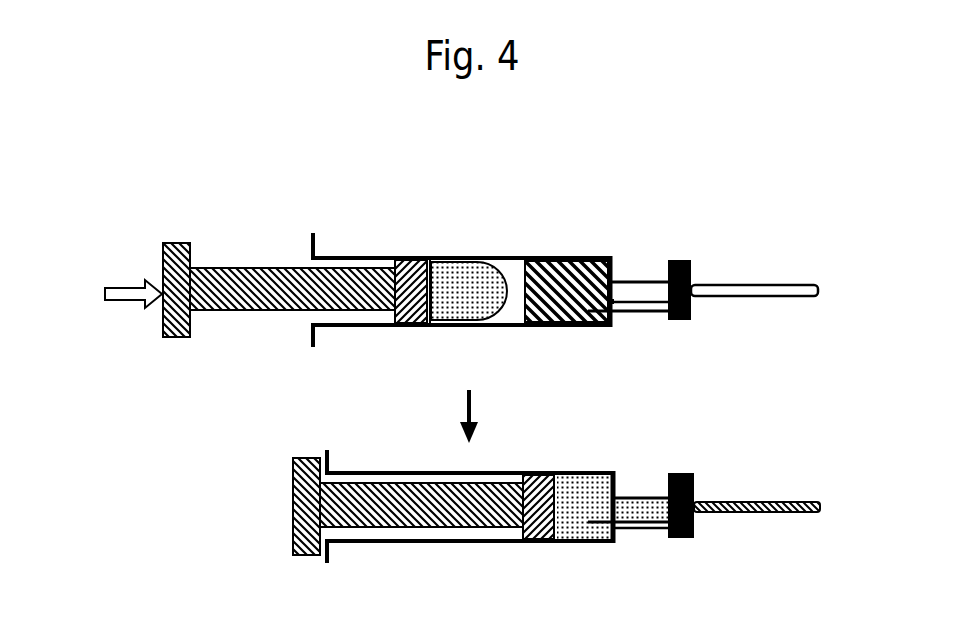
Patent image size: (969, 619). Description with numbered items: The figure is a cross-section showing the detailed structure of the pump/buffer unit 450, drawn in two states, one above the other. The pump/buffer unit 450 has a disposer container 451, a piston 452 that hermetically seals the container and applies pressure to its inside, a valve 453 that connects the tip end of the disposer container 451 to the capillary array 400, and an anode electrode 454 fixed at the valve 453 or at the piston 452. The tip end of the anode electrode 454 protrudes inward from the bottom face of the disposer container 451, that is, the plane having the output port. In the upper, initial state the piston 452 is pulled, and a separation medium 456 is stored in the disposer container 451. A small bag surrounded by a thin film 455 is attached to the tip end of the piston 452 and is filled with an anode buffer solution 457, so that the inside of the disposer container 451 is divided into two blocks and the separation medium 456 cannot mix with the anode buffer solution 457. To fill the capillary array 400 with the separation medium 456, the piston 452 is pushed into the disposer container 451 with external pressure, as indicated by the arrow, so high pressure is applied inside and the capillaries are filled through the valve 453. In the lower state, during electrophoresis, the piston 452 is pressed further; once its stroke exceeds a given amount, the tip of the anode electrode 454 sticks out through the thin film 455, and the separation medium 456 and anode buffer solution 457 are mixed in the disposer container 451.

The capillary array 400 is at (760, 285).
The pump/buffer unit 450 is at (311, 145).
The disposer container 451 is at (415, 258).
The piston 452 is at (293, 310).
The valve 453 is at (683, 260).
The anode electrode 454 is at (645, 315).
The thin film 455 is at (515, 290).
The separation medium 456 is at (560, 312).
The anode buffer solution 457 is at (450, 313).